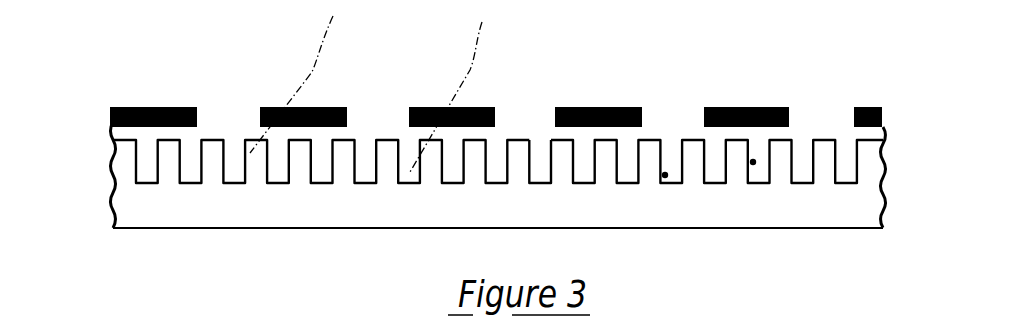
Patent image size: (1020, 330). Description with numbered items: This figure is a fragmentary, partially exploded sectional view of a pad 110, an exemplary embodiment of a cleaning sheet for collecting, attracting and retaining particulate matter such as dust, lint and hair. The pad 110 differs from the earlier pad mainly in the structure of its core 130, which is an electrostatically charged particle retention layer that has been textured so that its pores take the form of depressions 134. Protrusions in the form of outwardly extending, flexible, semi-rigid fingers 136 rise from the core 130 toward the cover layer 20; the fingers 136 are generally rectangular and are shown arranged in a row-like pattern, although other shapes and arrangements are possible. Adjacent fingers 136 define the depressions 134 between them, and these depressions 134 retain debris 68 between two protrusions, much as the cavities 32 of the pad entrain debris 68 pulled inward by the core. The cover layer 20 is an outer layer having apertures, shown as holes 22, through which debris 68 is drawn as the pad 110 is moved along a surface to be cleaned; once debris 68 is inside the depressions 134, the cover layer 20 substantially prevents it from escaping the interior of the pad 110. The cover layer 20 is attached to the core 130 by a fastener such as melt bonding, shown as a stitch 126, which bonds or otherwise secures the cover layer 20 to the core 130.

The cover layer 20 is at (147, 95).
The holes 22 is at (668, 130).
The cavities 32 is at (363, 172).
The debris 68 is at (665, 175).
The pad 110 is at (770, 68).
The stitch 126 is at (379, 86).
The core 130 is at (102, 215).
The depressions 134 is at (540, 158).
The fingers 136 is at (110, 162).